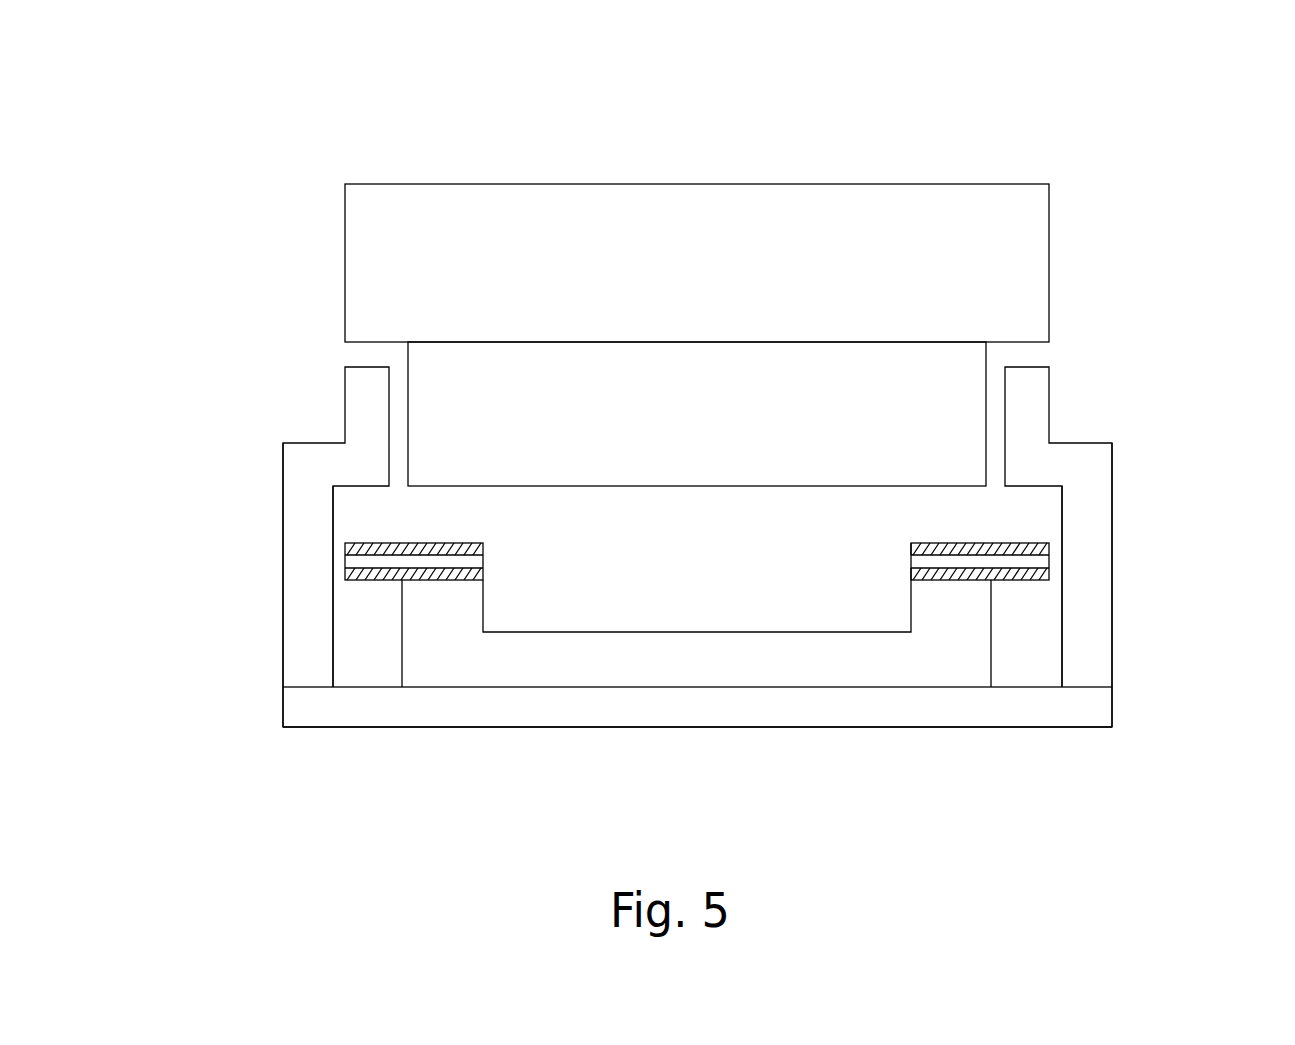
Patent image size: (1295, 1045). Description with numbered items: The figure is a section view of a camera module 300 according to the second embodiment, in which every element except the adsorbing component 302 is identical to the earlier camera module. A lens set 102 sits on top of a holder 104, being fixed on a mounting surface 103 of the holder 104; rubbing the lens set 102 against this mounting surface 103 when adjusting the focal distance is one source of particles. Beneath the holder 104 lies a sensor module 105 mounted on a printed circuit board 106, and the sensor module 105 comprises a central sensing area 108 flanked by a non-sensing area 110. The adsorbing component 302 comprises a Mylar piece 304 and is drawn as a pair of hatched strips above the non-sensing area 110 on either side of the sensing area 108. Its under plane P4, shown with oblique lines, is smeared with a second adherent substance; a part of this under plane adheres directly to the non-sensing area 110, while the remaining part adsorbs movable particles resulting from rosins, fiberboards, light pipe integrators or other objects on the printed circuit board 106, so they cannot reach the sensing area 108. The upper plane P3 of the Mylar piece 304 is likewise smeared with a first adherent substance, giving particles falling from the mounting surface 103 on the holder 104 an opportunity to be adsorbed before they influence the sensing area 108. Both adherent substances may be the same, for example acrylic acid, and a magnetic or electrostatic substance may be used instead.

The camera module 300 is at (1150, 124).
The lens set 102 is at (363, 267).
The mounting surface 103 is at (389, 412).
The holder 104 is at (295, 656).
The sensor module 105 is at (783, 668).
The printed circuit board 106 is at (1037, 713).
The sensing area 108 is at (868, 630).
The non-sensing area 110 is at (433, 580).
The adsorbing component 302 is at (512, 571).
The Mylar piece 304 is at (352, 561).
The upper plane P3 is at (911, 550).
The under plane P4 is at (912, 575).